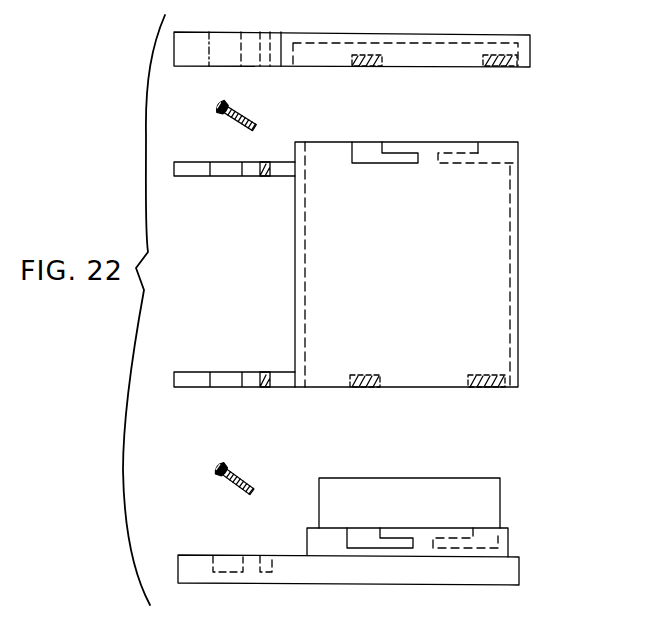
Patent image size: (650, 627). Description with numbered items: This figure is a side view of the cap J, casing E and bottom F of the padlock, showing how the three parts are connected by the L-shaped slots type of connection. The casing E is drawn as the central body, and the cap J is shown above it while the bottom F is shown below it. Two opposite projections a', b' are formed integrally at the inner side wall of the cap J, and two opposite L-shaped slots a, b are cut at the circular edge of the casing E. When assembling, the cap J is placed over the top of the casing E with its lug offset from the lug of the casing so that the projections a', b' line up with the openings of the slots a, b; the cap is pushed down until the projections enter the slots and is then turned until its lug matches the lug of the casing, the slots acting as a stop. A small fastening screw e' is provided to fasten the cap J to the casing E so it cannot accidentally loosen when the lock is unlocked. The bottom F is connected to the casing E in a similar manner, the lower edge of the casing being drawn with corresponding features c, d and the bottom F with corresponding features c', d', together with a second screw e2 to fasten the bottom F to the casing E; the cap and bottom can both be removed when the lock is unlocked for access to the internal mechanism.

The cap J is at (440, 33).
The projection a' is at (367, 74).
The projection b' is at (500, 74).
The fastening screw e' is at (245, 107).
The casing E is at (518, 262).
The L-shaped slot a is at (385, 137).
The L-shaped slot b is at (478, 138).
The hatched fastening block c is at (360, 398).
The hatched fastening block d is at (486, 396).
The screw e2 is at (250, 475).
The bottom F is at (426, 584).
The T-slot c' is at (380, 524).
The T-slot (hidden) d' is at (465, 523).